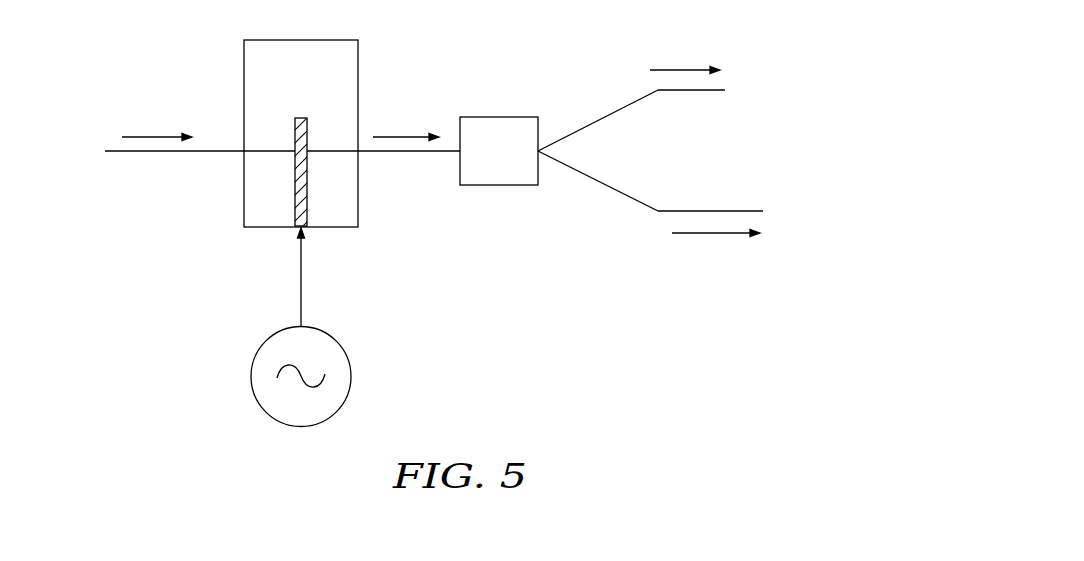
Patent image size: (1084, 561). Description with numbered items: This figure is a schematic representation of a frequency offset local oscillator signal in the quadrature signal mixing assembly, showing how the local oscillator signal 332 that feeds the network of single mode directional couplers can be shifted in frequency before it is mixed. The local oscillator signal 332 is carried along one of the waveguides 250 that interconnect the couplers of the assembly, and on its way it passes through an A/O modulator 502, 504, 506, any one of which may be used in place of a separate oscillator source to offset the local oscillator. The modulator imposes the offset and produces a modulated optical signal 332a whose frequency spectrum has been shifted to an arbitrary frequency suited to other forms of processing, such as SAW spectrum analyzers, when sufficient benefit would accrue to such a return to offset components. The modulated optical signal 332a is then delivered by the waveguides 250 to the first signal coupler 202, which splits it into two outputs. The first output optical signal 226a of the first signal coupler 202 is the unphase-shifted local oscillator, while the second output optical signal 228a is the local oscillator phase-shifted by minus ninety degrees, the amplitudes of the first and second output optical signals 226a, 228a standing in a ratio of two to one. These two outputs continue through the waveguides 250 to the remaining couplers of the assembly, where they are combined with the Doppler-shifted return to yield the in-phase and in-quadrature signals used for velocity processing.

The first signal coupler 202 is at (493, 185).
The first output optical signal 226a is at (675, 69).
The second output optical signal 228a is at (710, 235).
The waveguides 250 is at (177, 153).
The local oscillator signal 332 is at (140, 137).
The modulated optical signal 332a is at (395, 137).
The A/O modulator 502 is at (348, 397).
The A/O modulator 504 is at (302, 287).
The A/O modulator 506 is at (294, 135).